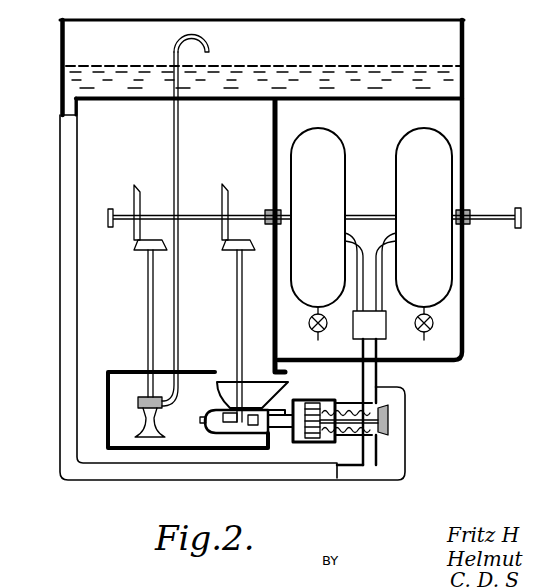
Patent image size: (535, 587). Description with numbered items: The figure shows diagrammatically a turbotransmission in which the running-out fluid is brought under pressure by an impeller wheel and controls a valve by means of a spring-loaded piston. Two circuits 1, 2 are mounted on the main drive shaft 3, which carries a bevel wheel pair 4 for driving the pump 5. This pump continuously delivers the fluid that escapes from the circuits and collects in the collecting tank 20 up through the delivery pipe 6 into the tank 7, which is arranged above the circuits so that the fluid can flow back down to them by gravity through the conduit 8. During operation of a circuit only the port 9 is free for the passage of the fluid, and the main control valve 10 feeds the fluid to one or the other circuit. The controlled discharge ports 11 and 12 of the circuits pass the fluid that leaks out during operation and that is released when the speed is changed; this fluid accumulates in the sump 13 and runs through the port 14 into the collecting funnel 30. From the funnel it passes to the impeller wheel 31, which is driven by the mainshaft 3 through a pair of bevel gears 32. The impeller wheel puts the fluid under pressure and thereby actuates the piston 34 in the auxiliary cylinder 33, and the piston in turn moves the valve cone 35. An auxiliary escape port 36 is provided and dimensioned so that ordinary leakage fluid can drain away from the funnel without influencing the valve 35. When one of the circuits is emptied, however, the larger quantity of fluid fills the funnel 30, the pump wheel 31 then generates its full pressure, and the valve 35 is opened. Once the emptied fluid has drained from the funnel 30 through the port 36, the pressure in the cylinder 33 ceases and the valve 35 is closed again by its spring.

The circuit 1 is at (318, 217).
The circuit 2 is at (424, 217).
The main drive shaft 3 is at (205, 214).
The bevel wheel pair 4 is at (135, 247).
The pump 5 is at (138, 403).
The pipe 6 is at (179, 150).
The tank 7 is at (263, 58).
The conduit 8 is at (60, 356).
The port 9 is at (384, 398).
The main control valve 10 is at (370, 349).
The controlled discharge port 11 is at (309, 324).
The controlled discharge port 12 is at (433, 324).
The sump 13 is at (269, 190).
The port 14 is at (282, 373).
The collecting tank 20 is at (198, 448).
The collecting funnel 30 is at (270, 393).
The impeller wheel 31 is at (256, 425).
The pair of bevel gears 32 is at (223, 245).
The auxiliary cylinder 33 is at (302, 443).
The piston 34 is at (313, 404).
The valve cone 35 is at (390, 420).
The auxiliary escape port 36 is at (203, 418).